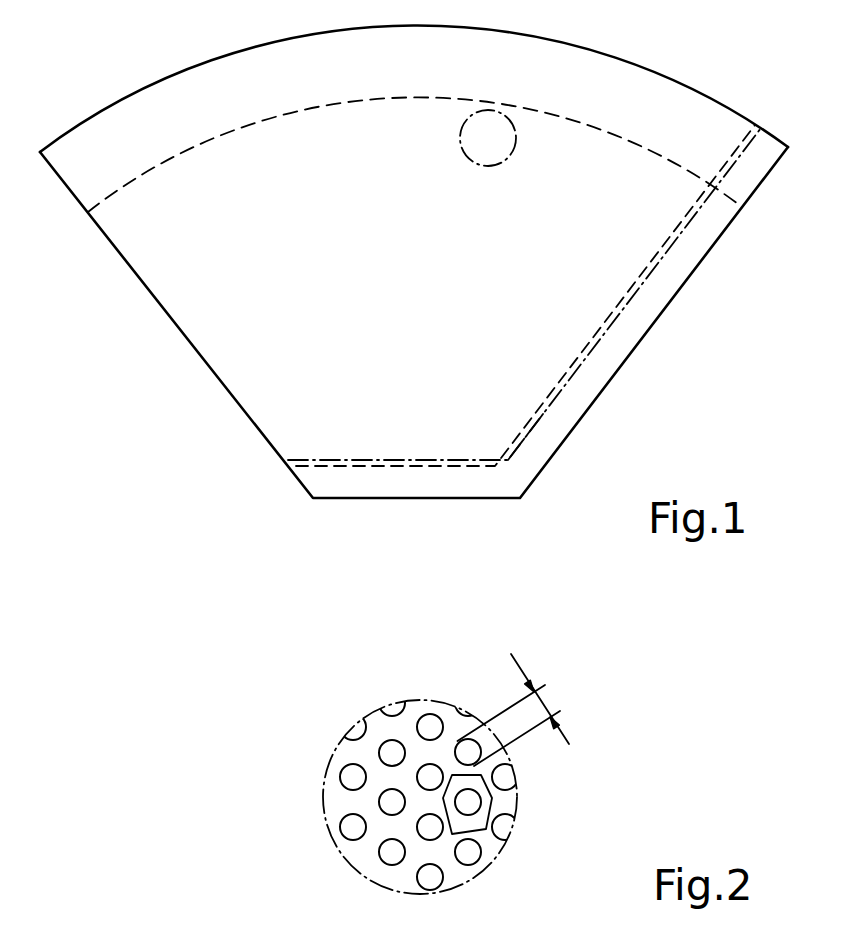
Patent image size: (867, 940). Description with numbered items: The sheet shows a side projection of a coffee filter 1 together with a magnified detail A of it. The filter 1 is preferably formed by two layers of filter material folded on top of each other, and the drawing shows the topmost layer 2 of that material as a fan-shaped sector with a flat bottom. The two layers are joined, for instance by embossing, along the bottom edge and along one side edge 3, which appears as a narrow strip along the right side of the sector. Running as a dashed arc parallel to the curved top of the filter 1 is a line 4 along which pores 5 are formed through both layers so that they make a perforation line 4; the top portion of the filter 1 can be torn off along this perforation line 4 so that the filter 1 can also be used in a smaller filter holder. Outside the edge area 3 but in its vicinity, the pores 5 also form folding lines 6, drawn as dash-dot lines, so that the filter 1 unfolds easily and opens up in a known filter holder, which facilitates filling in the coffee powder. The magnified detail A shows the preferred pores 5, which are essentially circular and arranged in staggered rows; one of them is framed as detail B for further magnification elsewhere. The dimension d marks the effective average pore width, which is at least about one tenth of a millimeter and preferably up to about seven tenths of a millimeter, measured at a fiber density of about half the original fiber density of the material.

In FIG. 1, the filter 1 is at (655, 66).
In FIG. 1, the topmost layer 2 is at (313, 215).
In FIG. 1, the side edge 3 is at (748, 182).
In FIG. 1, the perforation line 4 is at (133, 174).
In FIG. 2, the pores 5 is at (473, 857).
In FIG. 1, the folding lines 6 is at (508, 459).
In FIG. 1, the detail A is at (460, 141).
In FIG. 2, the detail A is at (337, 750).
In FIG. 2, the detail B is at (493, 800).
In FIG. 2, the effective average pore width d is at (514, 710).